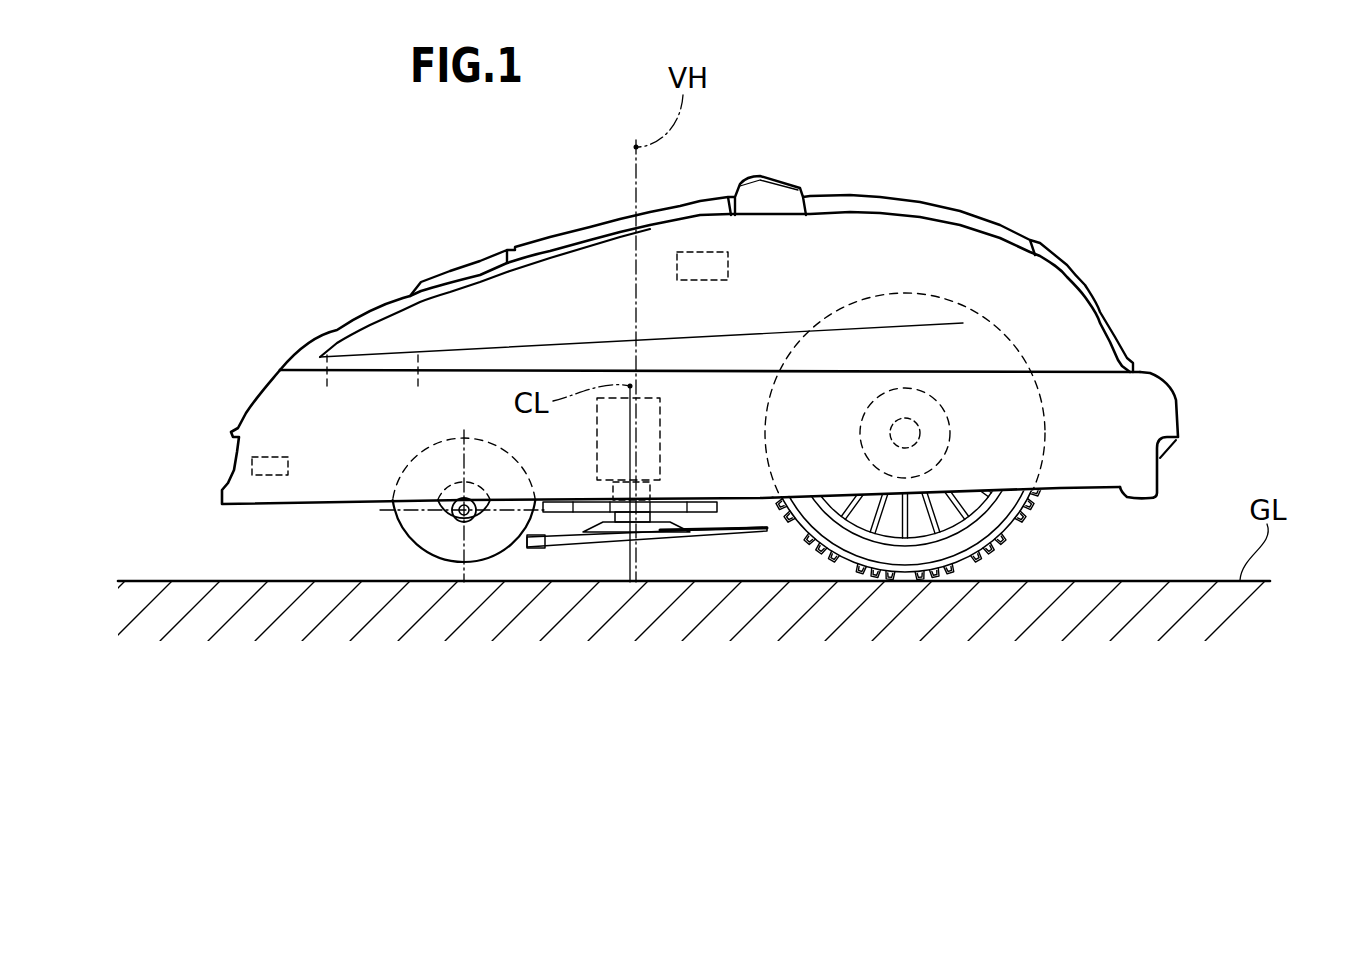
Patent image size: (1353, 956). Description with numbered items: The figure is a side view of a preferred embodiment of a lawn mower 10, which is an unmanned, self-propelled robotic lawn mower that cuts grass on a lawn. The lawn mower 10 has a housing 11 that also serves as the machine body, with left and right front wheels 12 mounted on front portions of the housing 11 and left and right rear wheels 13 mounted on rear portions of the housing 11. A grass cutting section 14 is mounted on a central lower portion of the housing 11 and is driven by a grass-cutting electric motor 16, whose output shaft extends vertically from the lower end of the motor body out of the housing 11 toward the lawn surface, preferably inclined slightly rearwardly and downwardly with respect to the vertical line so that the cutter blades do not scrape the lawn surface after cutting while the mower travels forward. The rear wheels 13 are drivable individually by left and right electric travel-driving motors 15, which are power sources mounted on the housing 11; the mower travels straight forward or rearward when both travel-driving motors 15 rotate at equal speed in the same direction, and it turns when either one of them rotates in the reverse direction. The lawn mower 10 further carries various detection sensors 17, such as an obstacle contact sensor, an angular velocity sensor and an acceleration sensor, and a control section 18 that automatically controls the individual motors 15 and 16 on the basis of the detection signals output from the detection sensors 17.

The lawn mower 10 is at (272, 170).
The housing 11 is at (462, 303).
The front wheels 12 is at (490, 555).
The rear wheels 13 is at (952, 550).
The grass cutting section 14 is at (710, 546).
The travel-driving motors 15 is at (957, 427).
The grass-cutting motor 16 is at (660, 432).
The detection sensors 17 is at (265, 455).
The control section 18 is at (728, 265).